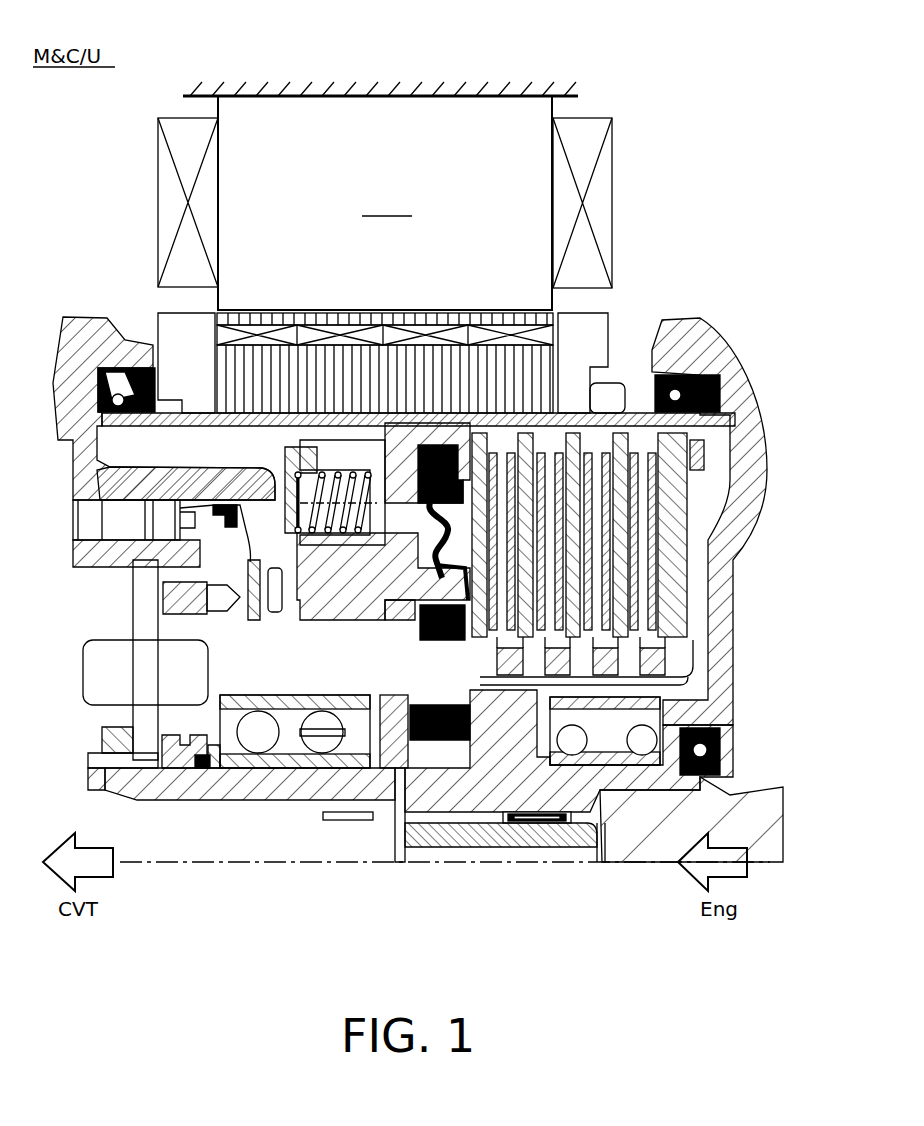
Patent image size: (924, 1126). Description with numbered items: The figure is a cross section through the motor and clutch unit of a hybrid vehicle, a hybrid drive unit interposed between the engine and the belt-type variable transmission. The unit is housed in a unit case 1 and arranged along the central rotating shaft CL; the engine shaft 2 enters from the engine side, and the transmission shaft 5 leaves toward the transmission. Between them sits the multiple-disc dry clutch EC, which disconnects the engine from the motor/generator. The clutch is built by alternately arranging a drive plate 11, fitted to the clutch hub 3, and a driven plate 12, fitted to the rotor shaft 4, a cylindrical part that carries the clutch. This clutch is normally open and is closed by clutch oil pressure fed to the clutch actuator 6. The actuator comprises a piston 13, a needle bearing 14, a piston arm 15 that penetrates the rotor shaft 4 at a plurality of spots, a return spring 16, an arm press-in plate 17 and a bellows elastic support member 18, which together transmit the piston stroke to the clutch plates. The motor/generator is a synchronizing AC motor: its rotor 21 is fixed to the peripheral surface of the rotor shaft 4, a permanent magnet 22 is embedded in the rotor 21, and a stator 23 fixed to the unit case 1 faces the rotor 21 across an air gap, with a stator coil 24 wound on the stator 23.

The unit case 1 is at (733, 381).
The engine shaft 2 is at (660, 825).
The clutch hub 3 is at (515, 810).
The rotor shaft 4 is at (398, 775).
The transmission shaft 5 is at (297, 800).
The clutch actuator 6 is at (230, 475).
The drive plate 11 is at (644, 605).
The driven plate 12 is at (640, 555).
The piston 13 is at (185, 570).
The needle bearing 14 is at (265, 590).
The piston arm 15 is at (330, 600).
The return spring 16 is at (350, 458).
The arm press-in plate 17 is at (455, 610).
The bellows elastic support member 18 is at (395, 538).
The rotor 21 is at (495, 383).
The permanent magnet 22 is at (400, 333).
The stator 23 is at (517, 133).
The stator coil 24 is at (600, 202).
The multiple-disc dry clutch EC is at (690, 505).
The central rotating shaft CL is at (368, 865).